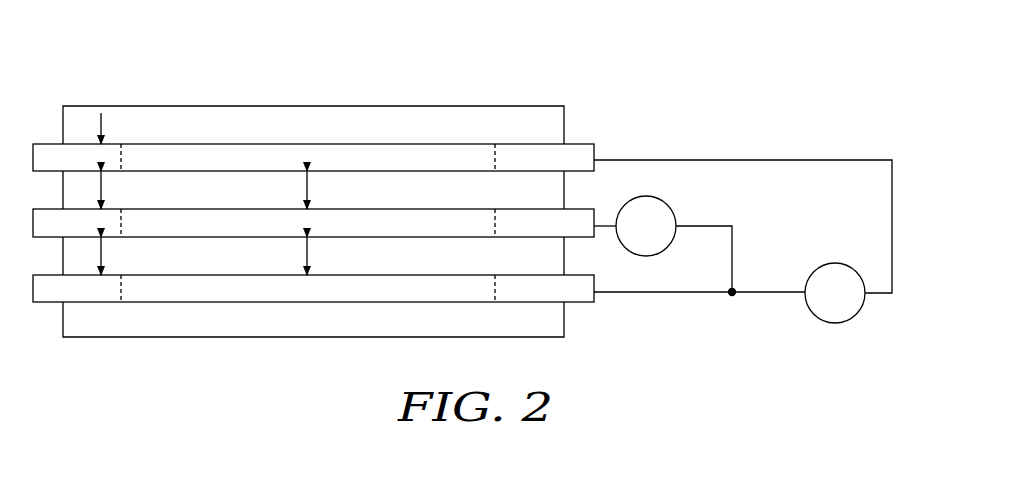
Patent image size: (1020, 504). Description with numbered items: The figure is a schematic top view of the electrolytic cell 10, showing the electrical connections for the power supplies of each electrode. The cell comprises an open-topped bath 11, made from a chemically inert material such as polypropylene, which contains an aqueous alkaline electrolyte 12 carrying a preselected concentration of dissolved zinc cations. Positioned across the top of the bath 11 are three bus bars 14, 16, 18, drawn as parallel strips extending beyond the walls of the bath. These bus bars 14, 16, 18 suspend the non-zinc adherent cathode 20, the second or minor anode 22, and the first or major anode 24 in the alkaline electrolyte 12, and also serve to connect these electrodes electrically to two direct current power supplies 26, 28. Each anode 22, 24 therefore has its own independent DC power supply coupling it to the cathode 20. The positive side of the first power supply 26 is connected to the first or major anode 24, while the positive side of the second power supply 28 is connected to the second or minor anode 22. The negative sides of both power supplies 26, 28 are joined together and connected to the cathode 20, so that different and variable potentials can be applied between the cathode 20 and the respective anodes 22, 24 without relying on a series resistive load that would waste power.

The electrolytic cell 10 is at (315, 83).
The bath 11 is at (218, 106).
The alkaline electrolyte 12 is at (158, 121).
The bus bar 14 is at (576, 304).
The bus bar 16 is at (580, 209).
The bus bar 18 is at (580, 145).
The cathode 20 is at (226, 311).
The second or minor anode 22 is at (408, 246).
The first or major anode 24 is at (247, 181).
The first power supply 26 is at (812, 318).
The second power supply 28 is at (648, 197).